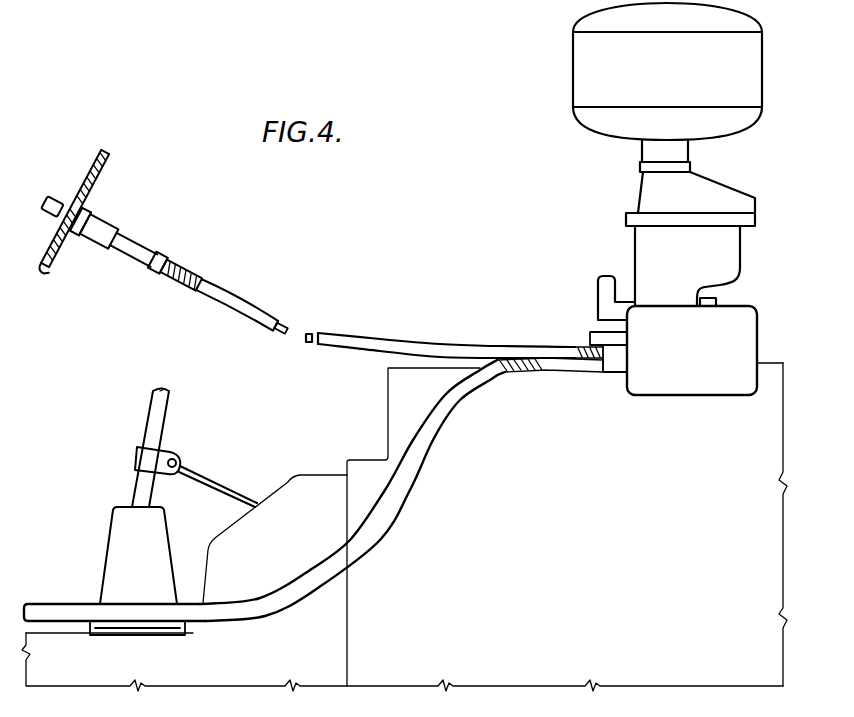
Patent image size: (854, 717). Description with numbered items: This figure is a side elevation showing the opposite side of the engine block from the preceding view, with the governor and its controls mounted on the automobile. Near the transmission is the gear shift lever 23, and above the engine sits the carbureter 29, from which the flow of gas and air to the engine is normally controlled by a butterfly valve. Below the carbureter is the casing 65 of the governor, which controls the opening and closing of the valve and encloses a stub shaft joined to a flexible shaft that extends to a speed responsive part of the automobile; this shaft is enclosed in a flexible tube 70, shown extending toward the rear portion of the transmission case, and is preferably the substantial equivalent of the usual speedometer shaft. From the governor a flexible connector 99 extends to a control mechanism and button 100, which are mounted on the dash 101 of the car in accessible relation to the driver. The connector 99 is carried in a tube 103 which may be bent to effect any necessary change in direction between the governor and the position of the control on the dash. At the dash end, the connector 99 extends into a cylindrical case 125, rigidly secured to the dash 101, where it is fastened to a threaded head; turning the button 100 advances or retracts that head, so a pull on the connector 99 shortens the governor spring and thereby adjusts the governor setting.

The gear shift lever 23 is at (157, 430).
The carbureter 29 is at (655, 250).
The governor casing 65 is at (642, 382).
The flexible tube 70 is at (223, 612).
The flexible connector 99 is at (292, 324).
The control button 100 is at (52, 206).
The dash 101 is at (90, 188).
The tube 103 is at (355, 340).
The cylindrical case 125 is at (100, 235).